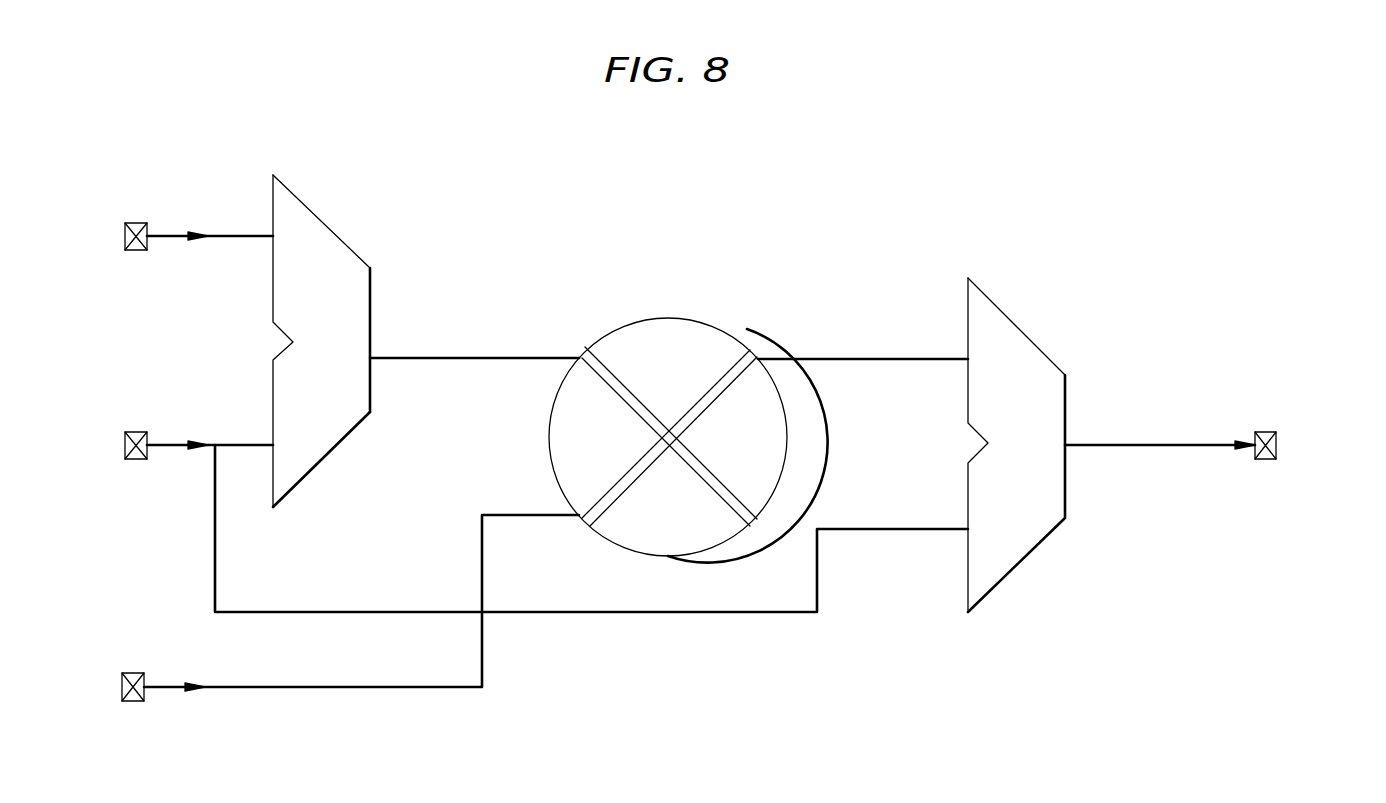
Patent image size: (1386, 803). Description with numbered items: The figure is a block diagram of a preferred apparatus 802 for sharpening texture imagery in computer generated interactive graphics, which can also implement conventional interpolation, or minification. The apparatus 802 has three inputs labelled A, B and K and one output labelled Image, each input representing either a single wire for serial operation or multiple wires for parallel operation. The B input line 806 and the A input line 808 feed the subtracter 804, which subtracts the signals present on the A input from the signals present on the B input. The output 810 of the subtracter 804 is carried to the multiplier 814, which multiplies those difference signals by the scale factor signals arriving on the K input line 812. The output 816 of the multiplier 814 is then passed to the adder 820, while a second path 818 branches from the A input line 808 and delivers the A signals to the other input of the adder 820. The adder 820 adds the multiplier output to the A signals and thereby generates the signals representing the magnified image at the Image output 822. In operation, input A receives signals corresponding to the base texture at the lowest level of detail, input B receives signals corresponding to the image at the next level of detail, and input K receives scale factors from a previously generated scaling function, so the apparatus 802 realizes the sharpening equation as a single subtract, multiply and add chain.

The apparatus 802 is at (517, 160).
The subtracter 804 is at (325, 225).
The input line B 806 is at (175, 236).
The input line A 808 is at (247, 448).
The output of the subtracter 810 is at (410, 357).
The gain factor k input line 812 is at (510, 517).
The multiplier 814 is at (693, 318).
The output of the multiplier 816 is at (910, 357).
The input A feed line to adder 818 is at (912, 530).
The adder 820 is at (1017, 322).
The Image output 822 is at (1170, 447).